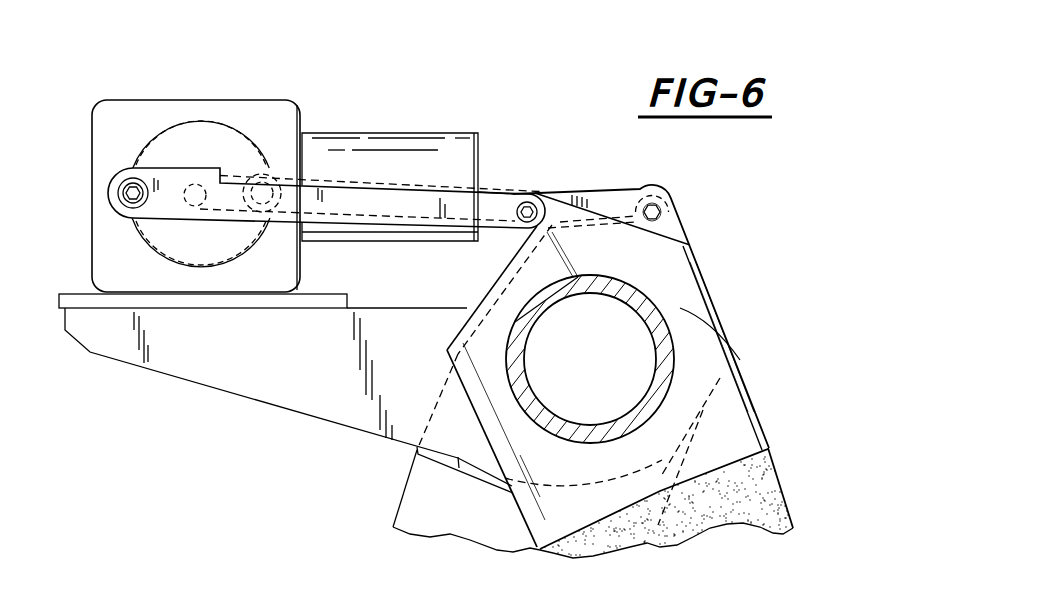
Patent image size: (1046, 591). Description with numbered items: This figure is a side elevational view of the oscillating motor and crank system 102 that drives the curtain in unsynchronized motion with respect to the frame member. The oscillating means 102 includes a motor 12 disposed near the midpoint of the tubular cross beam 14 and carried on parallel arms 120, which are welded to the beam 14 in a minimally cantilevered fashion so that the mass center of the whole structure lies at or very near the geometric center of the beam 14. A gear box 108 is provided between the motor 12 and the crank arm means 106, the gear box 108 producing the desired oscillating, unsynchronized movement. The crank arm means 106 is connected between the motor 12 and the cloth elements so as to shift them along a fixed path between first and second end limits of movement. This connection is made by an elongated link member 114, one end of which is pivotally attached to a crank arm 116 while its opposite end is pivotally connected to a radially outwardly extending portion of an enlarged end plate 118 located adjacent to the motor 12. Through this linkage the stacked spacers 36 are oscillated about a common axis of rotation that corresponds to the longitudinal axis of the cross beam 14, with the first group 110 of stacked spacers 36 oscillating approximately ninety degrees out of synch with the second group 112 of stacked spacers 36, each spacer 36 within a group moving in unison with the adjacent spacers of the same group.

The motor and crank system 102 is at (383, 66).
The crank arm means 106 is at (303, 148).
The gear box 108 is at (196, 161).
The motor 12 is at (390, 151).
The elongated link member 114 is at (472, 185).
The crank arm 116 is at (180, 281).
The enlarged end plate 118 is at (660, 276).
The arms 120 is at (286, 393).
The second group of stacked spacers 112 is at (557, 387).
The cross beam 14 is at (648, 359).
The stacked spacers 36 is at (689, 490).
The first group of stacked spacers 110 is at (844, 501).